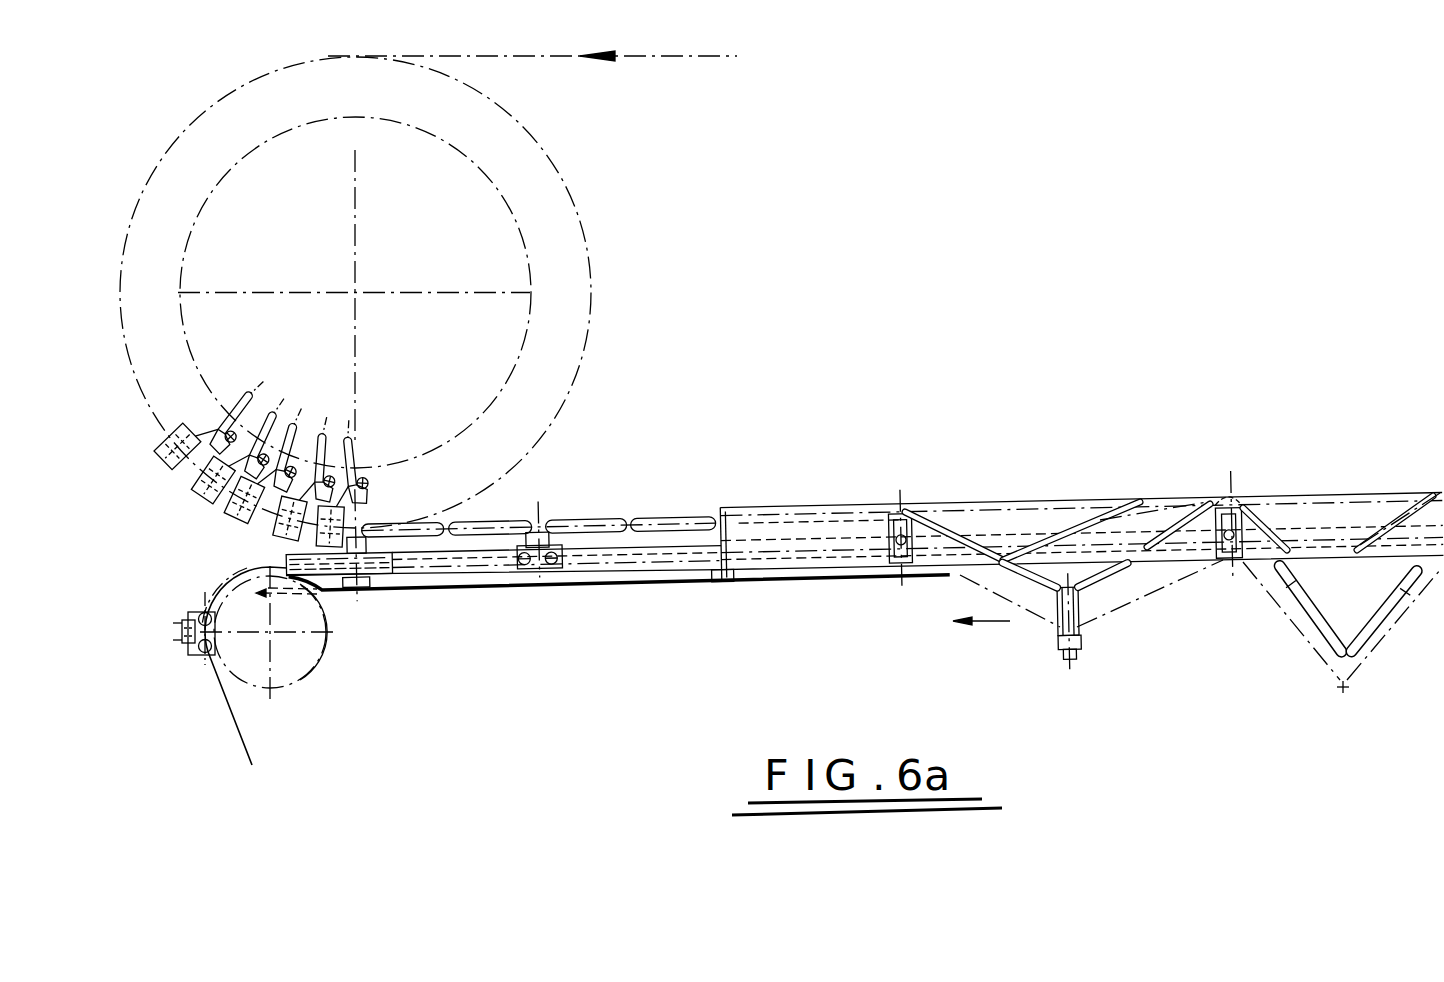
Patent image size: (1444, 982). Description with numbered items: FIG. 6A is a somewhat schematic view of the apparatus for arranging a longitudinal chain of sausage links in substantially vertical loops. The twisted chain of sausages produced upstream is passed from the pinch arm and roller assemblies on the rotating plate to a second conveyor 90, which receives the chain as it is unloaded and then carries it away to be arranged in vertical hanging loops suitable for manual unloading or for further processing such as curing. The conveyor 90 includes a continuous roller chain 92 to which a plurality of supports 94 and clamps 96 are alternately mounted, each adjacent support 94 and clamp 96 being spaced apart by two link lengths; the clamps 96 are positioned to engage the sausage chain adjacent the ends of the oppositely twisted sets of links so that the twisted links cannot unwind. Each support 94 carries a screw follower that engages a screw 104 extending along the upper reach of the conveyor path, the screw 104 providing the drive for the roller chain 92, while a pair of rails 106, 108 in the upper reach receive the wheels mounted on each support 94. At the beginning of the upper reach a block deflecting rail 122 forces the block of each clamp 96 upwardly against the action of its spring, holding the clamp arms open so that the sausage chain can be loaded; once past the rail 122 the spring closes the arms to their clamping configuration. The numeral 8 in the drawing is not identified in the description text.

The drum 8 is at (545, 232).
The second conveyor 90 is at (766, 434).
The continuous roller chain 92 is at (377, 576).
The support 94 is at (544, 573).
The clamp 96 is at (727, 586).
The screw 104 is at (826, 506).
The rail 106 is at (470, 572).
The rail 108 is at (556, 634).
The block deflecting rail 122 is at (312, 582).